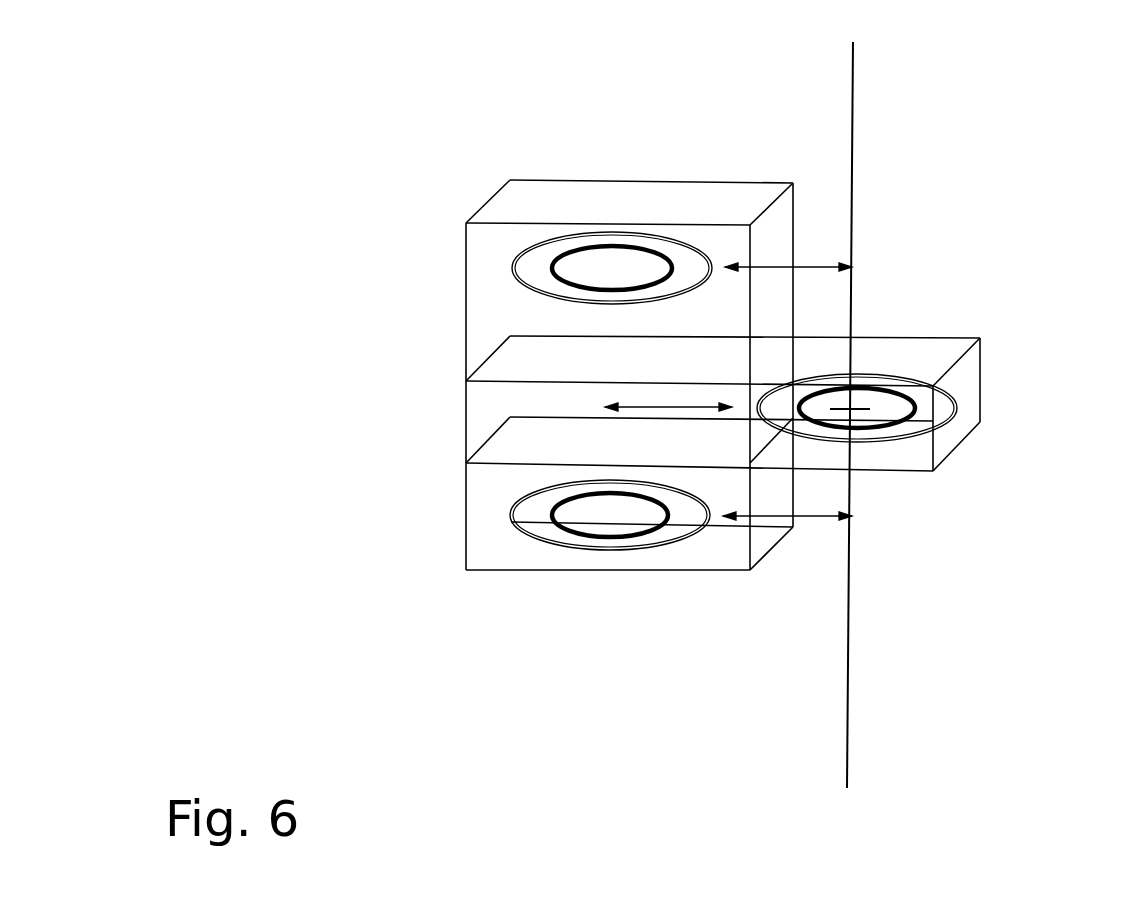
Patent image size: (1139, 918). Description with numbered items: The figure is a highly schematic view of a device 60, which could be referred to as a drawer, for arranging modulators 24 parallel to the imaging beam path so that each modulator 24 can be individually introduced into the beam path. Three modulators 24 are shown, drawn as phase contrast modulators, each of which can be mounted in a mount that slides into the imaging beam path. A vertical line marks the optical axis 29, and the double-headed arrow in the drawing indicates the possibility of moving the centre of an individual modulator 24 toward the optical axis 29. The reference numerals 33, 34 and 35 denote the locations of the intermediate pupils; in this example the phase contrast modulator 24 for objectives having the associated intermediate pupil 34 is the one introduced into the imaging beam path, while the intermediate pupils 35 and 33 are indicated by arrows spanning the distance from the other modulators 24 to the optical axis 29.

The device 60 is at (596, 150).
The optical axis 29 is at (858, 75).
The modulator 24 is at (510, 275).
The intermediate pupil 34 is at (857, 400).
The intermediate pupil 35 is at (863, 269).
The intermediate pupil 33 is at (862, 519).